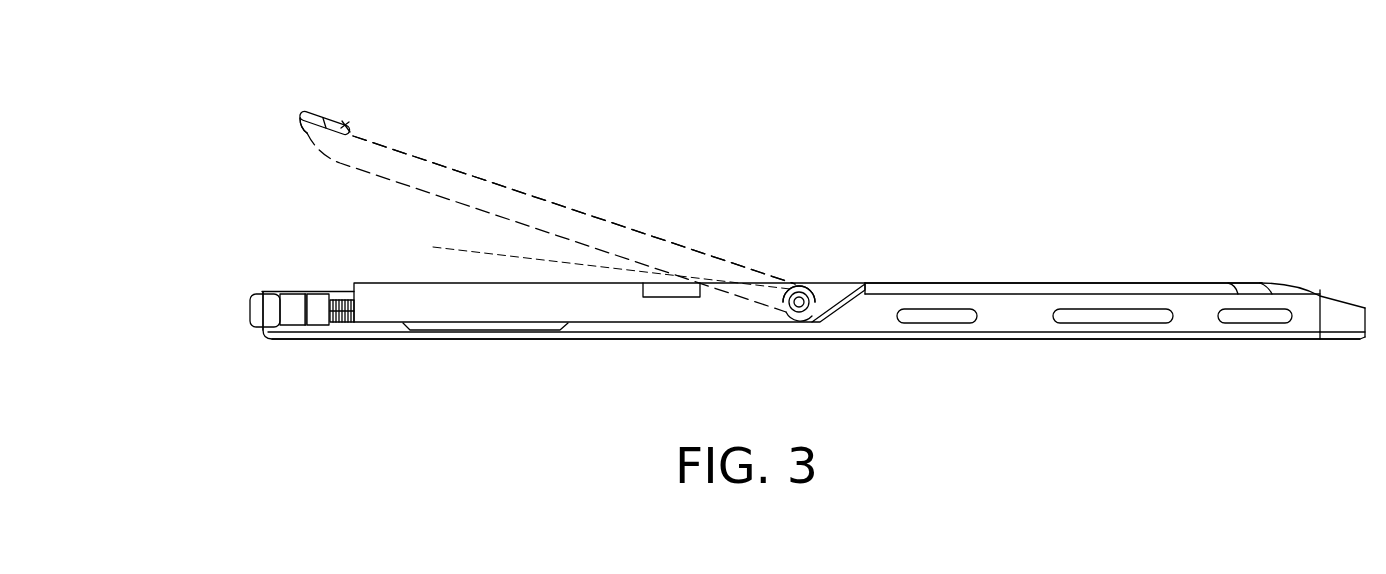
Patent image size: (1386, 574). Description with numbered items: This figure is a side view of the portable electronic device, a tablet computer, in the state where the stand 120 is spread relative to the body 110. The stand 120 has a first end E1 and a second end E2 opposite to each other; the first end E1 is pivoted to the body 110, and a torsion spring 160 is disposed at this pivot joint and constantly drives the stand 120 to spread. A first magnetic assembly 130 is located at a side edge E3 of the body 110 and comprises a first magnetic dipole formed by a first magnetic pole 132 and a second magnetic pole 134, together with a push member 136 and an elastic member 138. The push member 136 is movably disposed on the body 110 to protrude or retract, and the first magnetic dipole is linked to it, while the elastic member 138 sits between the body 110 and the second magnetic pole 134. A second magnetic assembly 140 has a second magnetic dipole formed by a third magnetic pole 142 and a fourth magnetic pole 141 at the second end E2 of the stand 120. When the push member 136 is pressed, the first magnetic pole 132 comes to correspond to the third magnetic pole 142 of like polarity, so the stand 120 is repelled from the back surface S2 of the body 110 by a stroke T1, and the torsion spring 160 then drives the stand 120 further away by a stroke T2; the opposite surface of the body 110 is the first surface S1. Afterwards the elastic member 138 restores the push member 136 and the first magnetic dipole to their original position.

The body 110 is at (1185, 288).
The stand 120 is at (618, 232).
The first magnetic assembly 130 is at (311, 377).
The first magnetic pole 132 is at (293, 318).
The second magnetic pole 134 is at (323, 318).
The push member 136 is at (258, 312).
The elastic member 138 is at (370, 351).
The second magnetic assembly 140 is at (404, 79).
The fourth magnetic pole 141 is at (313, 110).
The third magnetic pole 142 is at (350, 128).
The torsion spring 160 is at (806, 292).
The first end E1 is at (793, 270).
The second end E2 is at (290, 121).
The side edge E3 is at (251, 274).
The first surface S1 is at (1013, 341).
The back surface S2 is at (996, 275).
The stroke T1 is at (447, 242).
The stroke T2 is at (465, 214).